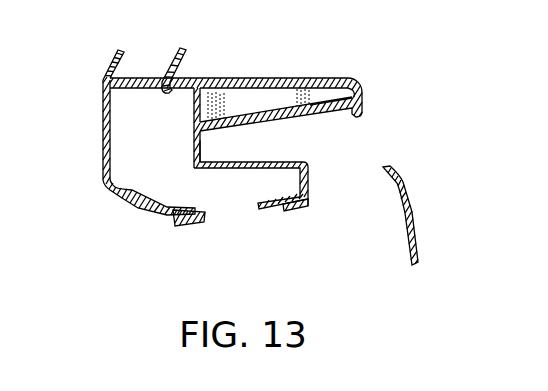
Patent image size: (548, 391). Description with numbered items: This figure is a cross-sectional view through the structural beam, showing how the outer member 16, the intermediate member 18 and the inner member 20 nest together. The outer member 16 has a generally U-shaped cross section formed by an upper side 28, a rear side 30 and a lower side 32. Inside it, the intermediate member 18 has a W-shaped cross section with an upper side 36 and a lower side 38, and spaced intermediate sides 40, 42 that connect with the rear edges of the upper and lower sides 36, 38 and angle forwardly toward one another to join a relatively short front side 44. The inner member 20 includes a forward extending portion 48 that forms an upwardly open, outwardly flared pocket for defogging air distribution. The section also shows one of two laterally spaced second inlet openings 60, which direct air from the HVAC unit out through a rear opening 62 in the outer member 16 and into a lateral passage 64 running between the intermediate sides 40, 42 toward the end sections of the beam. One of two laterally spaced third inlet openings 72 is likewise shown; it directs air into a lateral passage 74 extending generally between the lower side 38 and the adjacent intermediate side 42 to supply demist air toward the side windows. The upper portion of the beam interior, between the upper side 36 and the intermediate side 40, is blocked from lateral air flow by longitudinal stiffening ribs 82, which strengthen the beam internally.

The outer member 16 is at (342, 78).
The intermediate member 18 is at (337, 110).
The inner member 20 is at (105, 172).
The upper side 28 is at (294, 77).
The rear side 30 is at (405, 191).
The lower side 32 is at (292, 212).
The upper side 36 is at (200, 89).
The lower side 38 is at (290, 198).
The intermediate side 40 is at (258, 124).
The intermediate side 42 is at (257, 162).
The front side 44 is at (195, 142).
The forward extending portion 48 is at (100, 121).
The second inlet opening 60 is at (310, 202).
The rear opening 62 is at (359, 114).
The lateral passage 64 is at (200, 150).
The third inlet opening 72 is at (212, 221).
The lateral passage 74 is at (162, 188).
The longitudinal stiffening rib 82 is at (252, 97).